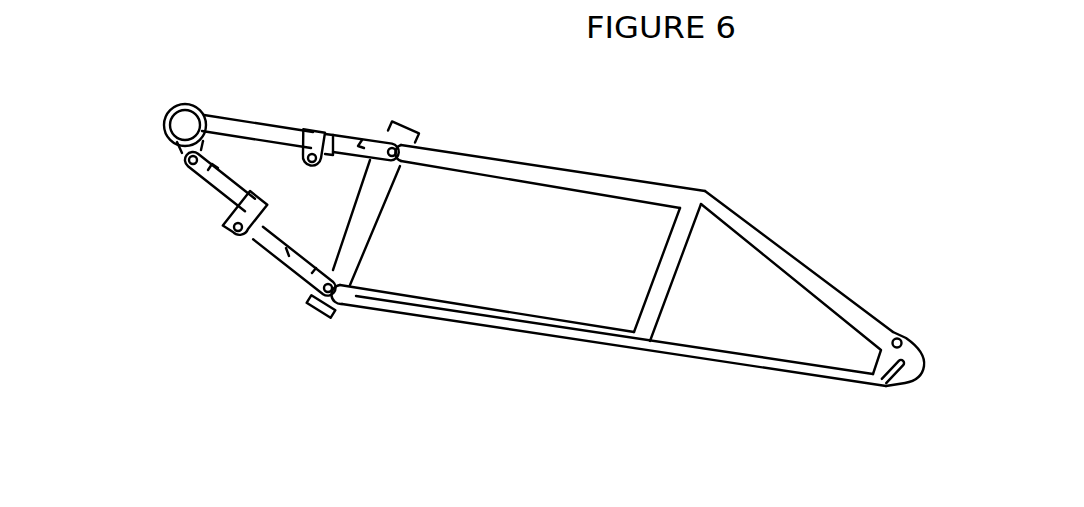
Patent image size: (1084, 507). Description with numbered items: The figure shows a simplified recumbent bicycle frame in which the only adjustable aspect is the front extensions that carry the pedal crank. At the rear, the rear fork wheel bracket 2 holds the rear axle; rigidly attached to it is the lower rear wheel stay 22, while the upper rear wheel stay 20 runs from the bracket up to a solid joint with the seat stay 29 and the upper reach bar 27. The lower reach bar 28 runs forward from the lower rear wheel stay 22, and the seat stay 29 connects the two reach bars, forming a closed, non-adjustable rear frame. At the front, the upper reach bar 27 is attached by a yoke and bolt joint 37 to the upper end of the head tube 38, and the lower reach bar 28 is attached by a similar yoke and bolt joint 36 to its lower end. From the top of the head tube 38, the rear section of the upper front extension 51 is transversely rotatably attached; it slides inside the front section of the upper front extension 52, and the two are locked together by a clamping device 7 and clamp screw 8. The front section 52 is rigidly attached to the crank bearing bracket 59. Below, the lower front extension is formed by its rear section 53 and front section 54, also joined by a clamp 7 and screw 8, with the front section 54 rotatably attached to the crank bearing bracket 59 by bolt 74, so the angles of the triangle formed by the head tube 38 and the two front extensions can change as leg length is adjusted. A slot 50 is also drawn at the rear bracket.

The rear fork wheel bracket 2 is at (907, 352).
The clamping device 7 is at (310, 128).
The clamp screw 8 is at (302, 158).
The upper rear wheel stay 20 is at (787, 258).
The lower rear wheel stay 22 is at (747, 365).
The upper reach bar 27 is at (588, 178).
The lower reach bar 28 is at (533, 325).
The seat stay 29 is at (667, 286).
The lower yoke and bolt joint 36 is at (335, 318).
The upper yoke and bolt joint 37 is at (416, 133).
The head tube 38 is at (362, 228).
The axle slot 50 is at (880, 382).
The rear section of upper front extension 51 is at (364, 130).
The front section of upper front extension 52 is at (250, 117).
The rear section of lower front extension 53 is at (288, 248).
The front section of lower front extension link 54 is at (213, 182).
The crank bearing bracket 59 is at (178, 103).
The bolt 74 is at (186, 158).